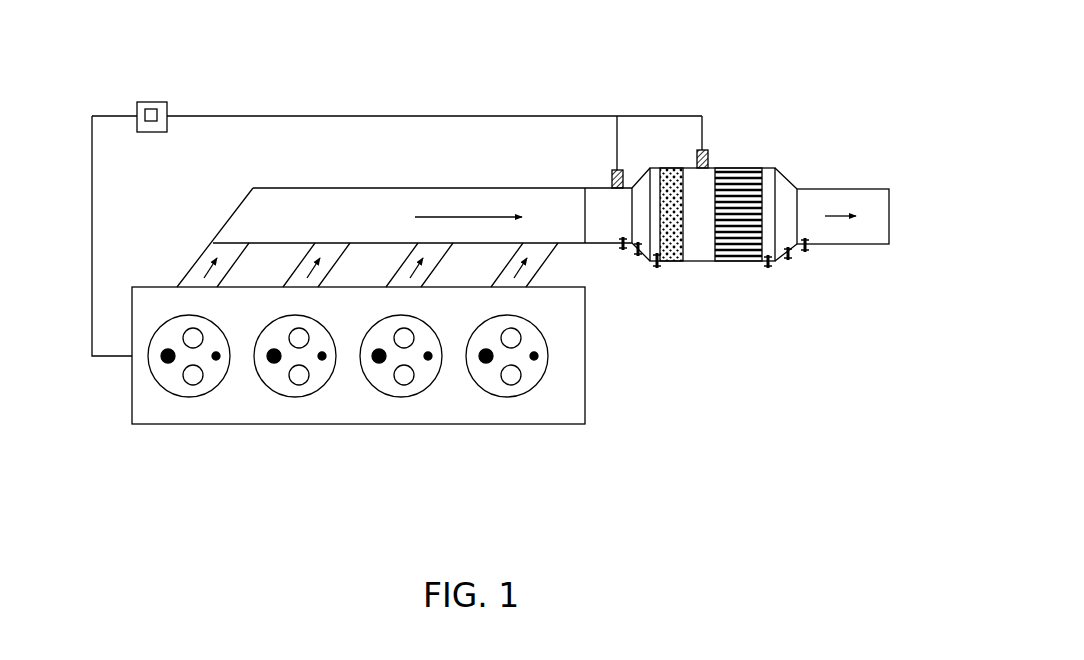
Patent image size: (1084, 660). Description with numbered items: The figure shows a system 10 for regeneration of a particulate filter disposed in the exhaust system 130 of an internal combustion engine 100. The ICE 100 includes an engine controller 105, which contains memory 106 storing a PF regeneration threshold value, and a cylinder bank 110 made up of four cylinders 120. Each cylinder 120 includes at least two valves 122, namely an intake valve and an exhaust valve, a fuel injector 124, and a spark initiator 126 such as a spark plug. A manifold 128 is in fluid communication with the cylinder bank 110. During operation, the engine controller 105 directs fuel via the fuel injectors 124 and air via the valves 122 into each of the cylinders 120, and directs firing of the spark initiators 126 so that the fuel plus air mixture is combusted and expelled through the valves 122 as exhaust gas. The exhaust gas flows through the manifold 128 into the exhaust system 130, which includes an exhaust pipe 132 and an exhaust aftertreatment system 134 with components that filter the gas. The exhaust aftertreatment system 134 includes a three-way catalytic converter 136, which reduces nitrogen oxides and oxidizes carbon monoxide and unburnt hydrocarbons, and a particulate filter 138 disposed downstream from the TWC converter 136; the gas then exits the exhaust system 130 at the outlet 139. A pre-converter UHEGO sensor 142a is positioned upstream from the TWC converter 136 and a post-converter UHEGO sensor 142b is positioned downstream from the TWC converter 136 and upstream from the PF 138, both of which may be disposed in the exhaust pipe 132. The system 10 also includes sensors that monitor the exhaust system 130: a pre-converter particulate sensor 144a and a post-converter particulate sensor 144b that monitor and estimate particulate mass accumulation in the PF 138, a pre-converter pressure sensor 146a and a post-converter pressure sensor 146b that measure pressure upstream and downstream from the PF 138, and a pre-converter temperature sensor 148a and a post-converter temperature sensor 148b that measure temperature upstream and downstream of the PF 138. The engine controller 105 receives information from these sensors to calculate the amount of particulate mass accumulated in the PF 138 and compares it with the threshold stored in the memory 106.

The system 10 is at (821, 92).
The internal combustion engine 100 is at (320, 402).
The engine controller 105 is at (386, 205).
The memory 106 is at (152, 103).
The cylinder bank 110 is at (121, 380).
The cylinder 120 is at (442, 373).
The valves 122 is at (412, 345).
The fuel injector 124 is at (377, 359).
The spark initiator 126 is at (428, 361).
The manifold 128 is at (338, 188).
The exhaust system 130 is at (724, 238).
The exhaust pipe 132 is at (597, 187).
The exhaust aftertreatment system 134 is at (771, 162).
The three-way catalytic converter 136 is at (672, 262).
The particulate filter 138 is at (753, 262).
The outlet 139 is at (889, 215).
The pre-converter UHEGO sensor 142a is at (612, 180).
The post-converter UHEGO sensor 142b is at (697, 157).
The pre-converter particulate sensor 144a is at (623, 250).
The post-converter particulate sensor 144b is at (768, 268).
The pre-converter pressure sensor 146a is at (638, 256).
The post-converter pressure sensor 146b is at (788, 260).
The pre-converter temperature sensor 148a is at (657, 268).
The post-converter temperature sensor 148b is at (805, 252).